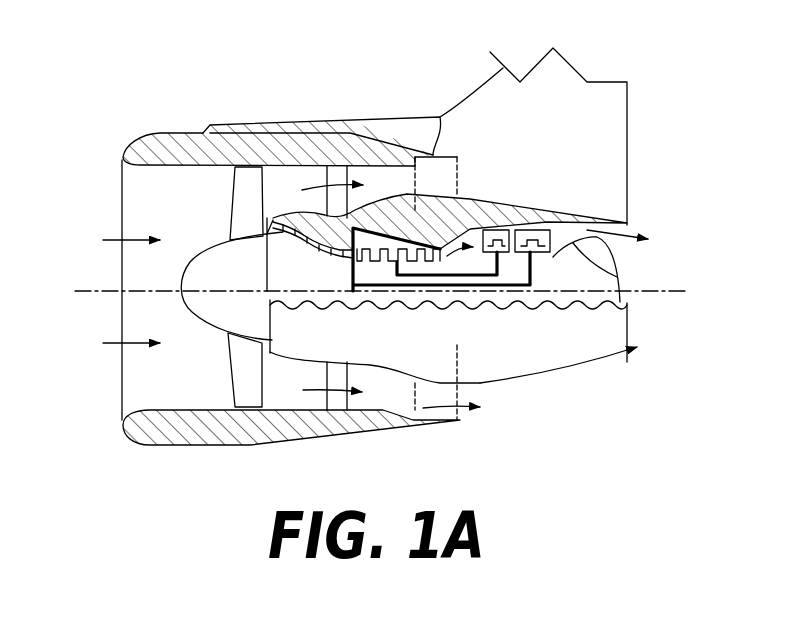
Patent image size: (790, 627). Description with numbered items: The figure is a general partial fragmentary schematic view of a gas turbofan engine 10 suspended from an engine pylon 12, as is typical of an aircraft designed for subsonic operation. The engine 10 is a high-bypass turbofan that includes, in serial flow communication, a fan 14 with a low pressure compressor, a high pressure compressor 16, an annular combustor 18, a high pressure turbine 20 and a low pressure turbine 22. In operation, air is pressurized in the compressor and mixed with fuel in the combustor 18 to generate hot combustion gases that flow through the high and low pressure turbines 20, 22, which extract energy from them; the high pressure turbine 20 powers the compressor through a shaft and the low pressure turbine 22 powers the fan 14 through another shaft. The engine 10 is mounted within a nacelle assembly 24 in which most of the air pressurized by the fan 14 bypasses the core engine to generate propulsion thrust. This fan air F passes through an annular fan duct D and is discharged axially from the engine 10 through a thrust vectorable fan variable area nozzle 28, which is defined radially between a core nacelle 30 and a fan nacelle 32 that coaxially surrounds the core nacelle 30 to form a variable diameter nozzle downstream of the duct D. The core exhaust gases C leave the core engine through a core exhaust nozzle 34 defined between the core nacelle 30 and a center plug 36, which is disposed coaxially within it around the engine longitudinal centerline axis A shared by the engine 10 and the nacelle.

The gas turbofan engine 10 is at (147, 108).
The engine pylon 12 is at (555, 82).
The fan 14 is at (232, 375).
The high pressure compressor 16 is at (387, 262).
The annular combustor 18 is at (468, 258).
The high pressure turbine 20 is at (502, 252).
The low pressure turbine 22 is at (545, 252).
The nacelle assembly 24 is at (240, 458).
The thrust vectorable fan variable area nozzle 28 is at (440, 117).
The core nacelle 30 is at (540, 217).
The fan nacelle 32 is at (290, 128).
The core exhaust nozzle 34 is at (627, 223).
The center plug 36 is at (603, 273).
The engine longitudinal centerline axis A is at (665, 292).
The core exhaust gases C is at (625, 360).
The annular fan duct D is at (296, 201).
The fan air F is at (316, 182).